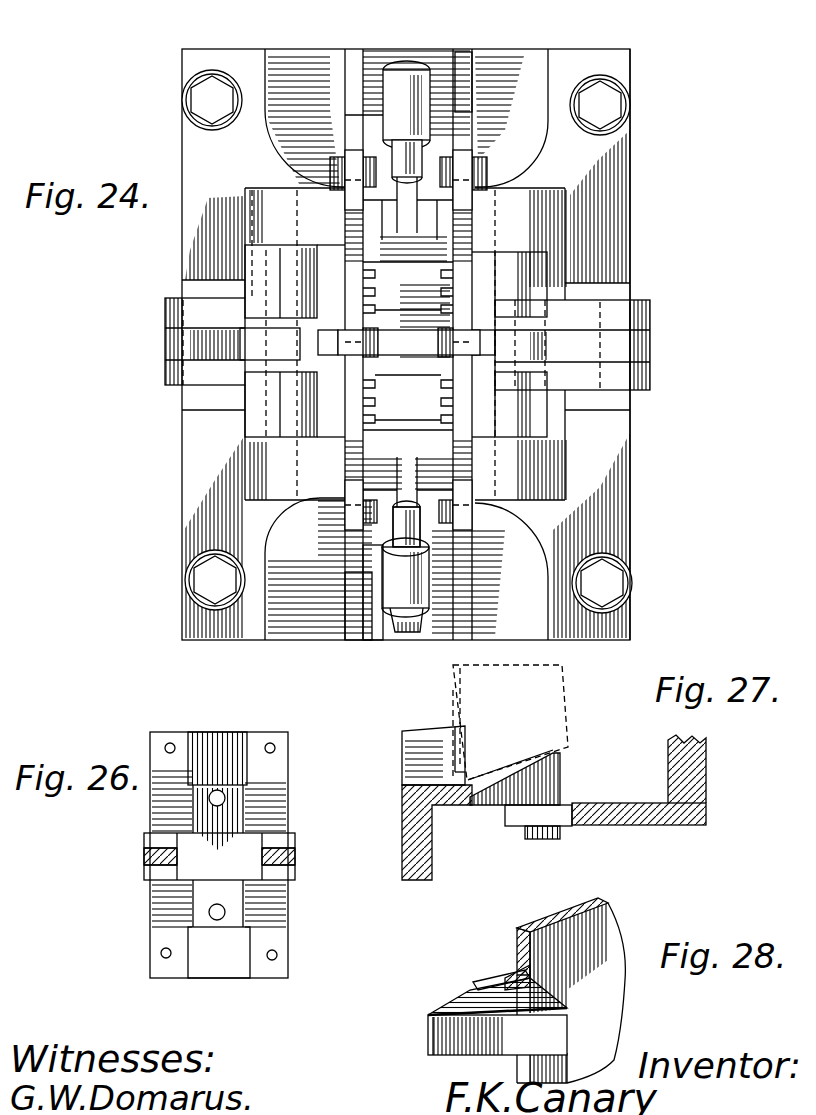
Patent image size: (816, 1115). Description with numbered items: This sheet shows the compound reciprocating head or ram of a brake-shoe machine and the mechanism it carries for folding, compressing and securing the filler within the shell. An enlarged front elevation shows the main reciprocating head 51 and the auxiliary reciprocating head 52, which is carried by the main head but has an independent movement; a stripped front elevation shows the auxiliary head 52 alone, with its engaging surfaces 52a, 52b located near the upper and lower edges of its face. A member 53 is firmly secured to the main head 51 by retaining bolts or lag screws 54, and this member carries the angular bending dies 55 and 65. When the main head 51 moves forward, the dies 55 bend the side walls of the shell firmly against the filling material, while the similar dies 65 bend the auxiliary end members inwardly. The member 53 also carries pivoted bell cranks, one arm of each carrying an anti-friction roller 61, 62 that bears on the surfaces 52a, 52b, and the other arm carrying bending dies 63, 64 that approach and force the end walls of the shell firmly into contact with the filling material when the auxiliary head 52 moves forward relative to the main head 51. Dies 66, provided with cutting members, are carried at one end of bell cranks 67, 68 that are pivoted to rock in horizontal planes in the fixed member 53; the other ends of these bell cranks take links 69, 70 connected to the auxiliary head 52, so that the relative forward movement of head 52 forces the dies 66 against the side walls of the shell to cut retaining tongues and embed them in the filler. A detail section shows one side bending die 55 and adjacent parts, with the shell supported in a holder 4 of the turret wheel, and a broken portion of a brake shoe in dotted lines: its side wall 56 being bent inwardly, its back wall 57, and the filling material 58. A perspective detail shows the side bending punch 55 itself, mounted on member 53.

In FIG. 27, the shell support or holder 4 is at (438, 752).
In FIG. 24, the main reciprocating head 51 is at (270, 64).
In FIG. 26, the main reciprocating head 51 is at (265, 912).
In FIG. 26, the auxiliary reciprocating head 52 is at (227, 817).
In FIG. 24, the engaging surface 52a is at (460, 75).
In FIG. 26, the engaging surface 52a is at (222, 752).
In FIG. 24, the engaging surface 52b is at (360, 593).
In FIG. 26, the engaging surface 52b is at (222, 957).
In FIG. 24, the member 53 is at (603, 183).
In FIG. 27, the member 53 is at (628, 813).
In FIG. 28, the member 53 is at (577, 933).
In FIG. 24, the retaining bolts or lag screws 54 is at (218, 113).
In FIG. 24, the angular bending die 55 is at (380, 334).
In FIG. 27, the angular bending die 55 is at (560, 774).
In FIG. 28, the angular bending die 55 is at (500, 1030).
In FIG. 27, the side wall of the shell 56 is at (503, 760).
In FIG. 27, the back wall of the shell 57 is at (452, 683).
In FIG. 27, the filling material 58 is at (566, 676).
In FIG. 24, the anti-friction roller 61 is at (380, 58).
In FIG. 24, the anti-friction roller 62 is at (368, 580).
In FIG. 24, the bending die 63 is at (440, 148).
In FIG. 24, the bending die 64 is at (413, 522).
In FIG. 24, the angular bending die 65 is at (355, 148).
In FIG. 24, the die 66 is at (442, 285).
In FIG. 24, the bell crank 67 is at (255, 341).
In FIG. 24, the bell crank 68 is at (568, 312).
In FIG. 24, the link 69 is at (185, 343).
In FIG. 24, the link 70 is at (640, 345).